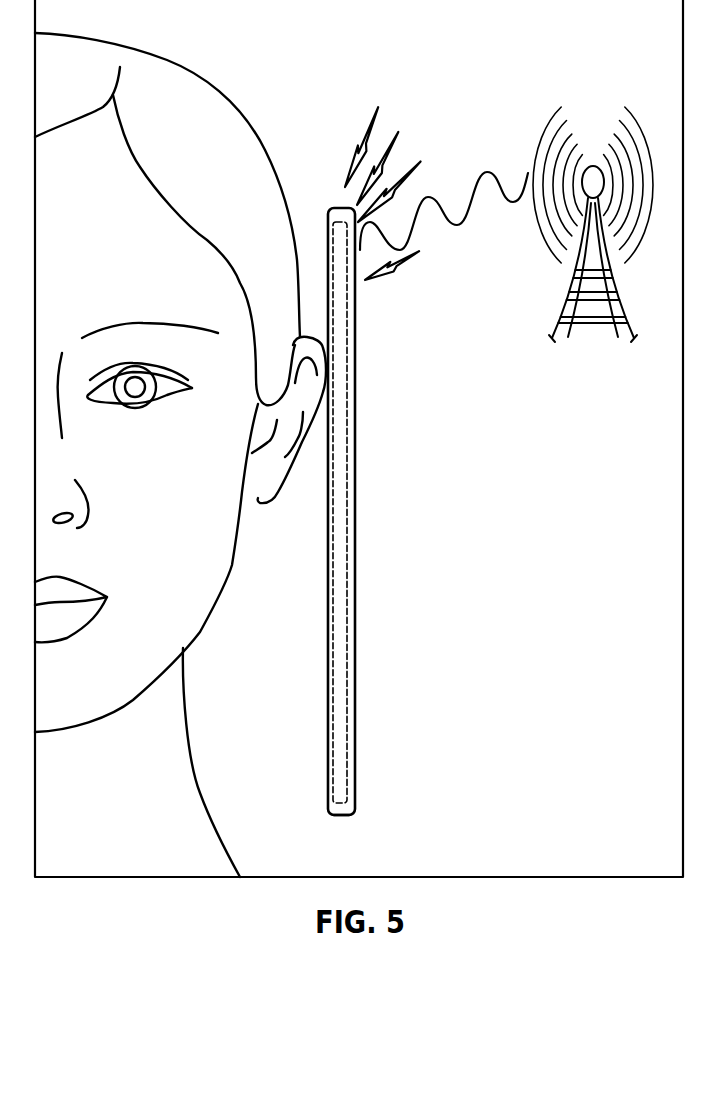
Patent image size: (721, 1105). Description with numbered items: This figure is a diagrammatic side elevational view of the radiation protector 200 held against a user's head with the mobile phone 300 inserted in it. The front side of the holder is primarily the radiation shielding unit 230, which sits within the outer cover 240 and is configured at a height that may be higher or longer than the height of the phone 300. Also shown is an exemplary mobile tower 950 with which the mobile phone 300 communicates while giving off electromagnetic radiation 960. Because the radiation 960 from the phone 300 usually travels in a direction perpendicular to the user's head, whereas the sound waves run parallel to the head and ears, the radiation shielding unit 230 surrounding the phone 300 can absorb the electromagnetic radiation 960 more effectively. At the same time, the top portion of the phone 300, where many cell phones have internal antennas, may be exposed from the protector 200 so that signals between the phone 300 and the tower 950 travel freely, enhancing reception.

The radiation protector 200 is at (375, 483).
The outer cover 240 is at (355, 509).
The mobile phone 300 is at (347, 738).
The radiation shielding unit 230 is at (347, 822).
The mobile tower 950 is at (618, 110).
The electromagnetic radiation 960 is at (380, 92).